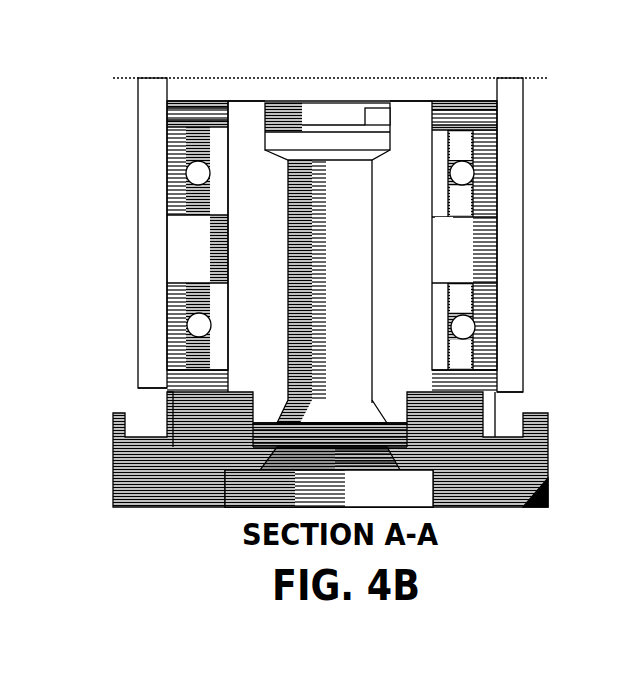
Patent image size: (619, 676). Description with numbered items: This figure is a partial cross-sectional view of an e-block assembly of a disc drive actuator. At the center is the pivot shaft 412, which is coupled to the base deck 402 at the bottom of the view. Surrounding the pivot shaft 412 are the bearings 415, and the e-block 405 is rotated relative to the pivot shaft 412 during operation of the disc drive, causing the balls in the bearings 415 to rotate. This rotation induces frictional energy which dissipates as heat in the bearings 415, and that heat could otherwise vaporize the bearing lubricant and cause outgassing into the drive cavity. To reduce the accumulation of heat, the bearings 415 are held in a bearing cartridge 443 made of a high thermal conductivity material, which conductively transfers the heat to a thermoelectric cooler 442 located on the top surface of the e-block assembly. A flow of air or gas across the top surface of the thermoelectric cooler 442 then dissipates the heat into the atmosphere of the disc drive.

The base deck 402 is at (545, 455).
The e-block 405 is at (532, 110).
The pivot shaft 412 is at (330, 187).
The bearings 415 is at (191, 133).
The thermoelectric cooler 442 is at (330, 90).
The bearing cartridge 443 is at (152, 100).